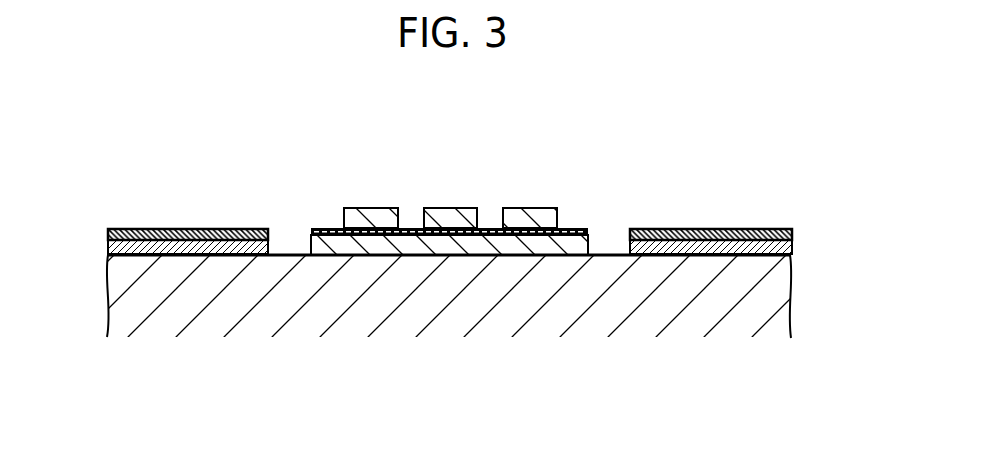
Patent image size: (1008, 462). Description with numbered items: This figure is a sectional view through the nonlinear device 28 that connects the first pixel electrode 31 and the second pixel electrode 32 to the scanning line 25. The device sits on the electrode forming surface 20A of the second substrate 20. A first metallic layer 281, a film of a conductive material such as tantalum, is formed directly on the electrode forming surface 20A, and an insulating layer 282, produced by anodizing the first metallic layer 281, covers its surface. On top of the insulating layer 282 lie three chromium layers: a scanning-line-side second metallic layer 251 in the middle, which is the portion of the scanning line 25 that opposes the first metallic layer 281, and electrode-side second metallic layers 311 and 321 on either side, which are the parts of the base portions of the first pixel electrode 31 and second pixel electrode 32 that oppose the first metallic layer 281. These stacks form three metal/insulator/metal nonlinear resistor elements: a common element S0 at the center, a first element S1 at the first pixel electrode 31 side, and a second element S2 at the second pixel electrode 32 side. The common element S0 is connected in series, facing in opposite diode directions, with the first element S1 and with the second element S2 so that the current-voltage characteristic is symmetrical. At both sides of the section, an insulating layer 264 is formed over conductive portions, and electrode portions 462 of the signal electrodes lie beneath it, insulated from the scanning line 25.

The second substrate 20 is at (477, 260).
The electrode forming surface 20A is at (290, 254).
The nonlinear device 28 is at (476, 270).
The first metallic layer 281 is at (463, 257).
The insulating layer 282 is at (590, 228).
The second pixel electrode 32 is at (377, 208).
The electrode-side second metallic layer 321 is at (361, 166).
The scanning line 25 is at (457, 208).
The scanning-line-side second metallic layer 251 is at (431, 183).
The first pixel electrode 31 is at (548, 208).
The electrode-side second metallic layer 311 is at (527, 166).
The insulating layer 264 is at (150, 229).
The electrode portion 462 is at (108, 245).
The common element S0 is at (485, 227).
The first element S1 is at (563, 227).
The second element S2 is at (336, 227).